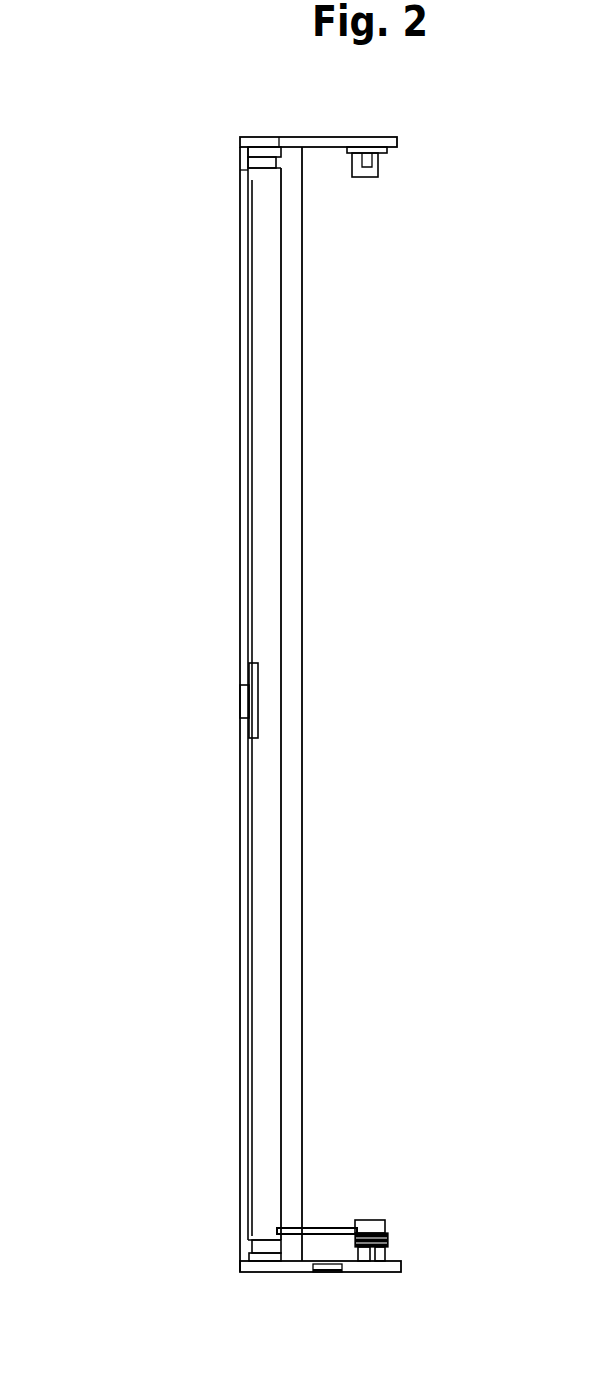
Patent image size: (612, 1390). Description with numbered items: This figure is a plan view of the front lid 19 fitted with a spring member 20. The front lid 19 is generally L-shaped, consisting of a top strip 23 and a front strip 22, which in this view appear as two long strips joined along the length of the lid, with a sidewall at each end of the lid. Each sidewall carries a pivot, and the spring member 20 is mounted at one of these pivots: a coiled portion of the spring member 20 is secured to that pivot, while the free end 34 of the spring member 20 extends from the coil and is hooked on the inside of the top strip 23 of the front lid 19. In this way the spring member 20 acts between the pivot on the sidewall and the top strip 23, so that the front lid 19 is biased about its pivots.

The front lid 19 is at (110, 262).
The spring member 20 is at (337, 1228).
The front strip 22 is at (240, 595).
The top strip 23 is at (270, 525).
The free end 34 is at (290, 1228).